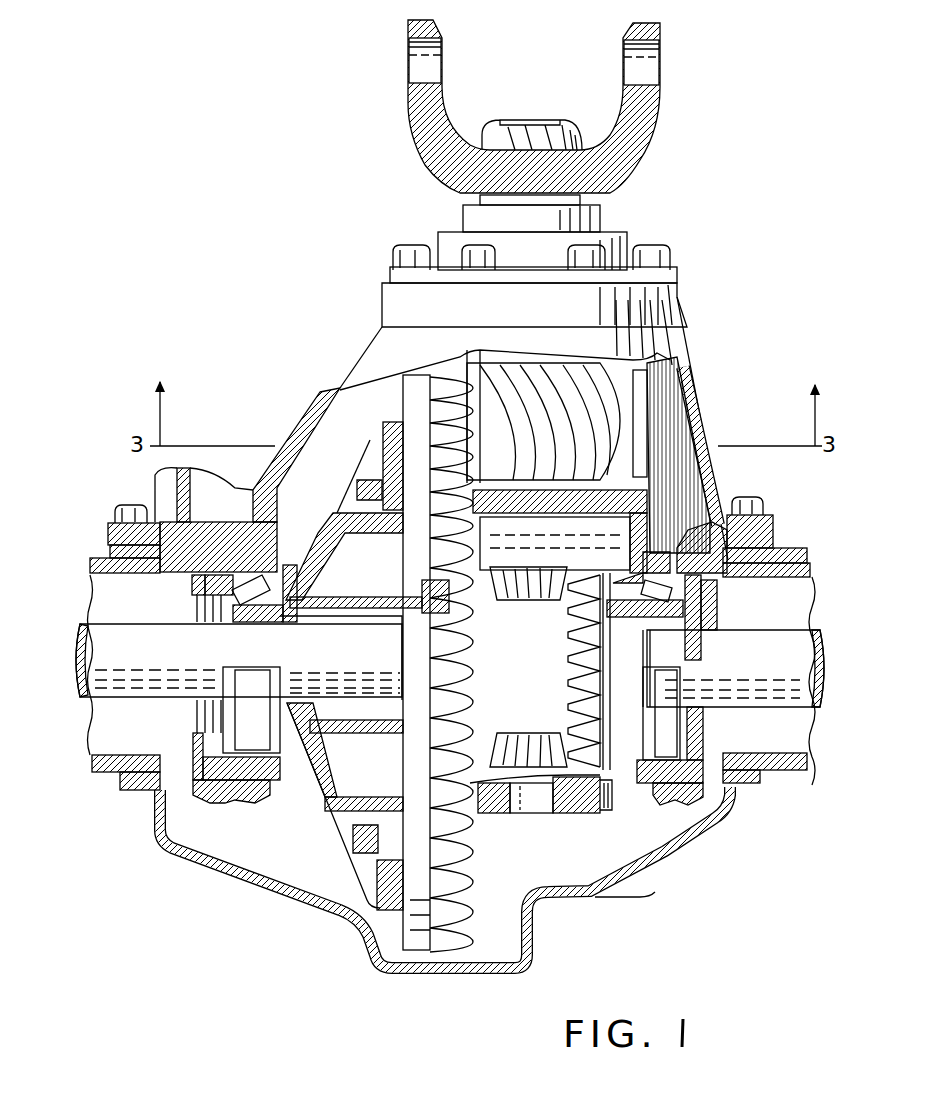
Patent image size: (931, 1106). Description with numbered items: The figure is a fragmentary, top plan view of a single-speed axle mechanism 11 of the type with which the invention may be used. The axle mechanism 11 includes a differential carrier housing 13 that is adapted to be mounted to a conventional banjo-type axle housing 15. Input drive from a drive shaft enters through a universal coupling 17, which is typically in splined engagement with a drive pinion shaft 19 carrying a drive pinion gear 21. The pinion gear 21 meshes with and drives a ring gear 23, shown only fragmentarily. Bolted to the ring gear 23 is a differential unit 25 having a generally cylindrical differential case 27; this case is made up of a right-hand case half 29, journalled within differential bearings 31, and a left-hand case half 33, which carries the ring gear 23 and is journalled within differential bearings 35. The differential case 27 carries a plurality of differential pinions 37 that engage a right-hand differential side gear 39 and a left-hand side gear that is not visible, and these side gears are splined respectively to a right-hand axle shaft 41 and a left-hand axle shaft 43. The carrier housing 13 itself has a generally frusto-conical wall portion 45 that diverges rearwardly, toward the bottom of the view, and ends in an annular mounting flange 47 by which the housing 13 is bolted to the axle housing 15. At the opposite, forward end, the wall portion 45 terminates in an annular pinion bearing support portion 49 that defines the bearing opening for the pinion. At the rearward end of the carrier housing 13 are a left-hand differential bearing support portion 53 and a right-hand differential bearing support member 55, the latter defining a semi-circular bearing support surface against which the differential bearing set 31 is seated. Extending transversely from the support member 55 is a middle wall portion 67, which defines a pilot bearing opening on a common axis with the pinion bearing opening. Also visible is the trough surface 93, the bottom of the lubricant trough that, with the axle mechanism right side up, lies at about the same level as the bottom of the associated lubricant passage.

The axle mechanism 11 is at (780, 262).
The differential carrier housing 13 is at (708, 398).
The axle housing 15 is at (287, 902).
The universal coupling 17 is at (652, 118).
The drive pinion shaft 19 is at (598, 203).
The drive pinion gear 21 is at (530, 400).
The ring gear 23 is at (422, 630).
The differential unit 25 is at (315, 818).
The differential case 27 is at (538, 828).
The right-hand case half 29 is at (577, 805).
The differential bearings 31 is at (662, 622).
The left-hand case half 33 is at (494, 805).
The differential bearings 35 is at (262, 575).
The differential pinions 37 is at (545, 605).
The right-hand differential side gear 39 is at (568, 660).
The right-hand axle shaft 41 is at (800, 657).
The left-hand axle shaft 43 is at (85, 655).
The frusto-conical wall portion 45 is at (322, 413).
The annular mounting flange 47 is at (118, 535).
The pinion bearing support portion 49 is at (380, 312).
The left-hand differential bearing support portion 53 is at (185, 575).
The right-hand differential bearing support member 55 is at (707, 550).
The middle wall portion 67 is at (550, 497).
The trough surface 93 is at (670, 480).